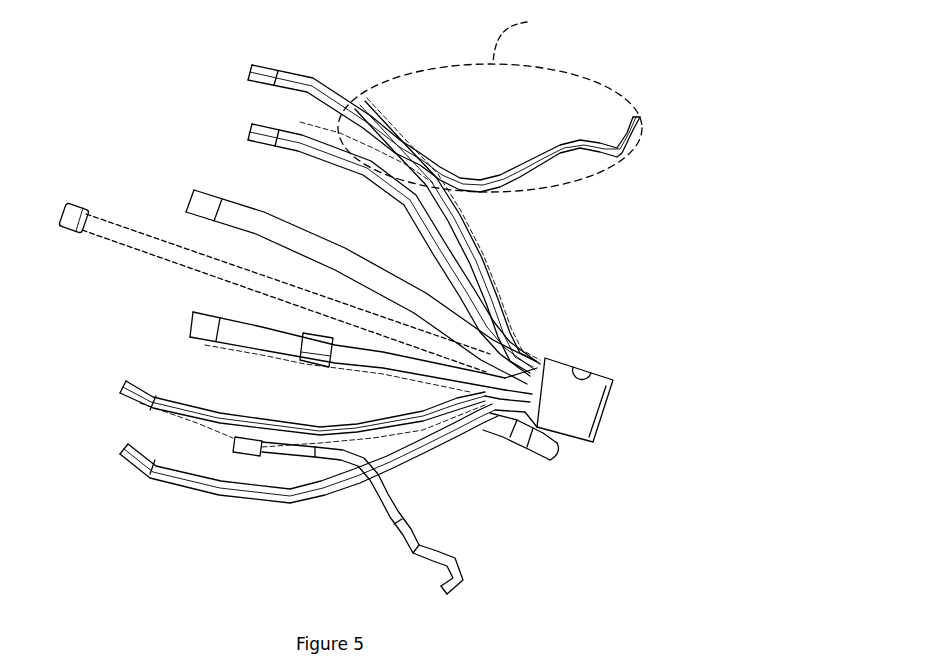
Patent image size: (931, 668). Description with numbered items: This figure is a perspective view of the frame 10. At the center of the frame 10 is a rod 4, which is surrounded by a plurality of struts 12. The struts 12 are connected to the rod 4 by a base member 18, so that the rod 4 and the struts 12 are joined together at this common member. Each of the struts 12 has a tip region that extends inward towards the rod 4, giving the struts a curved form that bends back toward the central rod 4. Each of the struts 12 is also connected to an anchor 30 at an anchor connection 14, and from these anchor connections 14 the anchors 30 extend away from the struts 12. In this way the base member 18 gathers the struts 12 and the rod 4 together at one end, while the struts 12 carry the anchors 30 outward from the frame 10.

The frame 10 is at (592, 561).
The rod 4 is at (72, 198).
The struts 12 is at (124, 446).
The anchor connection 14 is at (327, 357).
The base member 18 is at (598, 380).
The anchor 30 is at (541, 481).